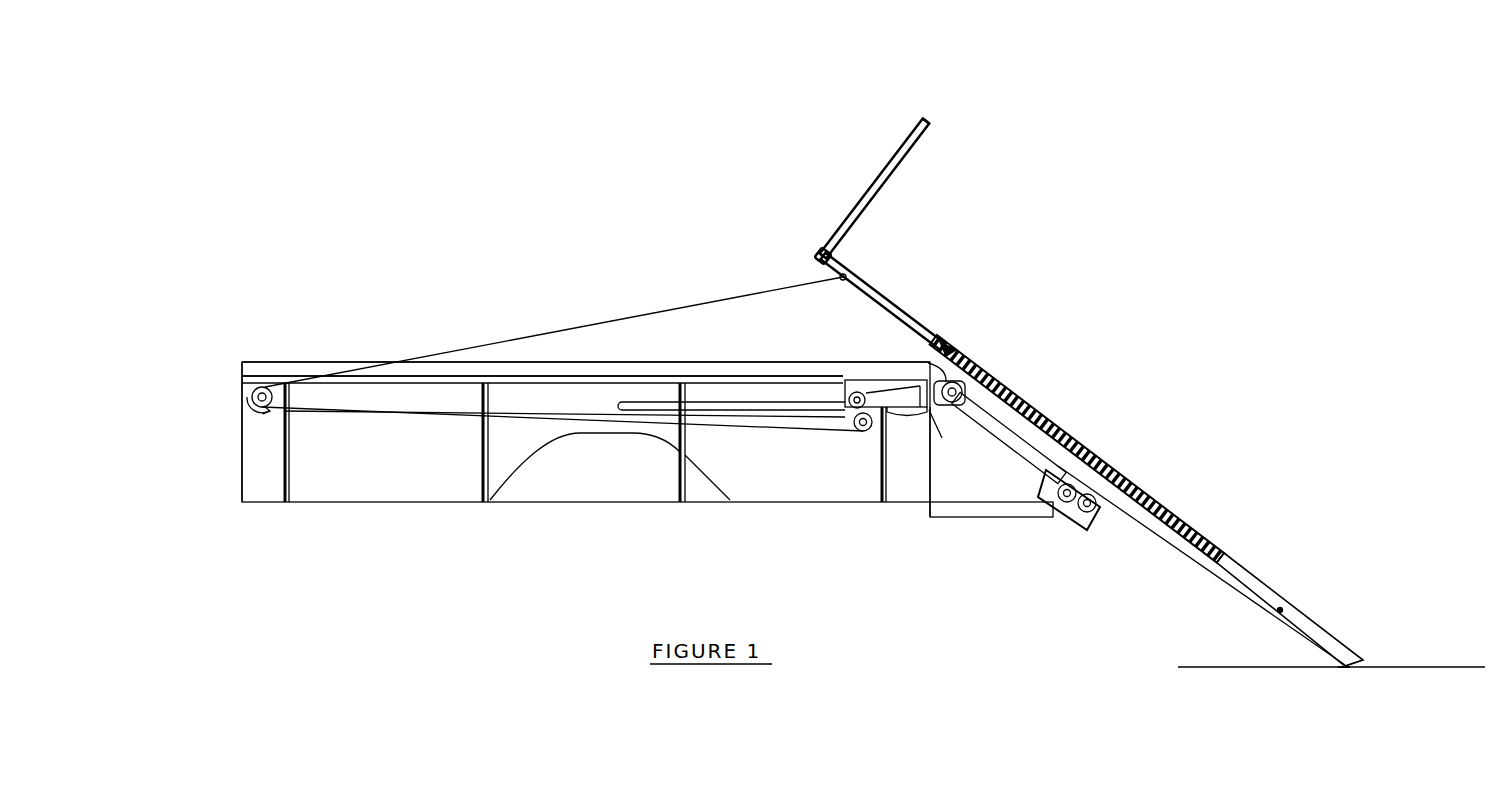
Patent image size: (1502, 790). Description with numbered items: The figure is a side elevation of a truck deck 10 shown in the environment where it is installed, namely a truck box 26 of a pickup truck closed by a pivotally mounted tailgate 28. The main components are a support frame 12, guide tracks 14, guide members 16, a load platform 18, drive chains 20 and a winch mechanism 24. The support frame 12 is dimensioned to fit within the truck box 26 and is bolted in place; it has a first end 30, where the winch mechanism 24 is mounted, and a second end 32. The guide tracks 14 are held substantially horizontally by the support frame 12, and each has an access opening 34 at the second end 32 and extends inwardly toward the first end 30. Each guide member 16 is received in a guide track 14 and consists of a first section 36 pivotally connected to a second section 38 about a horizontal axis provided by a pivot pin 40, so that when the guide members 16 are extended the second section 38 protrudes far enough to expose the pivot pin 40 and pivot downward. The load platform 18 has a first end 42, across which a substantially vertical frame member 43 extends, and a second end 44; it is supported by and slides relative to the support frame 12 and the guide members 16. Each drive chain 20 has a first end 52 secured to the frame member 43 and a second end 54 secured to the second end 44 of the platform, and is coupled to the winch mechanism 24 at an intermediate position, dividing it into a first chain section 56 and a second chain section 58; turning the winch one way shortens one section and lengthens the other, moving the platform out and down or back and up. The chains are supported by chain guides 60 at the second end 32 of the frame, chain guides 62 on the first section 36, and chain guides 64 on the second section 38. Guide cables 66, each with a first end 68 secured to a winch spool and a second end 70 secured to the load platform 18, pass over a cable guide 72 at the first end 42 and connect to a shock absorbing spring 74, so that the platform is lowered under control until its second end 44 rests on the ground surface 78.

The truck deck 10 is at (483, 199).
The support frame 12 is at (288, 478).
The guide tracks 14 is at (730, 410).
The guide members 16 is at (950, 346).
The load platform 18 is at (1262, 585).
The drive chains 20 is at (447, 418).
The winch mechanism 24 is at (258, 386).
The truck box 26 is at (590, 480).
The tailgate 28 is at (1008, 518).
The first end 30 is at (241, 475).
The second end 32 is at (931, 505).
The access opening 34 is at (942, 438).
The first section 36 is at (875, 392).
The second section 38 is at (1000, 440).
The pivot pin 40 is at (981, 370).
The first end 42 is at (821, 254).
The vertically extending frame member 43 is at (872, 187).
The second end 44 is at (1361, 655).
The first end 52 is at (925, 120).
The second end 54 is at (1340, 669).
The first chain section 56 is at (305, 411).
The second chain section 58 is at (423, 385).
The chain guides 60 is at (866, 430).
The chain guides 62 is at (840, 378).
The chain guides 64 is at (1087, 513).
The guide cables 66 is at (600, 320).
The first end 68 is at (303, 377).
The second end 70 is at (926, 330).
The cable guide 72 is at (848, 276).
The shock absorbing spring 74 is at (1041, 412).
The ground surface 78 is at (1228, 669).